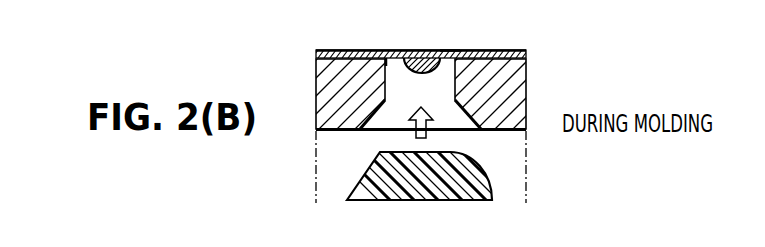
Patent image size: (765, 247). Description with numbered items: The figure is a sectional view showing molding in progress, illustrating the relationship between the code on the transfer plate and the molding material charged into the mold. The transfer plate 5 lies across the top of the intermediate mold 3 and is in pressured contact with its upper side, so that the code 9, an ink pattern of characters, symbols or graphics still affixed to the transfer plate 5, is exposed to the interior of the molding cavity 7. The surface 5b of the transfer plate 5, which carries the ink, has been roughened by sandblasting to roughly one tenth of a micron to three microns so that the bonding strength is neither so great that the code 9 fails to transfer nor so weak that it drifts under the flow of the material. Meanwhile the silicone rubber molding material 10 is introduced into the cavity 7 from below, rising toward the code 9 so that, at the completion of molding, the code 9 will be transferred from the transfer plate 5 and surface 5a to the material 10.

The intermediate mold 3 is at (503, 113).
The transfer plate 5 is at (333, 49).
The film surface portion 5a is at (448, 51).
The surface of the transfer plate 5b is at (387, 57).
The molding cavity 7 is at (377, 122).
The code 9 is at (417, 75).
The silicone rubber molding material 10 is at (379, 197).